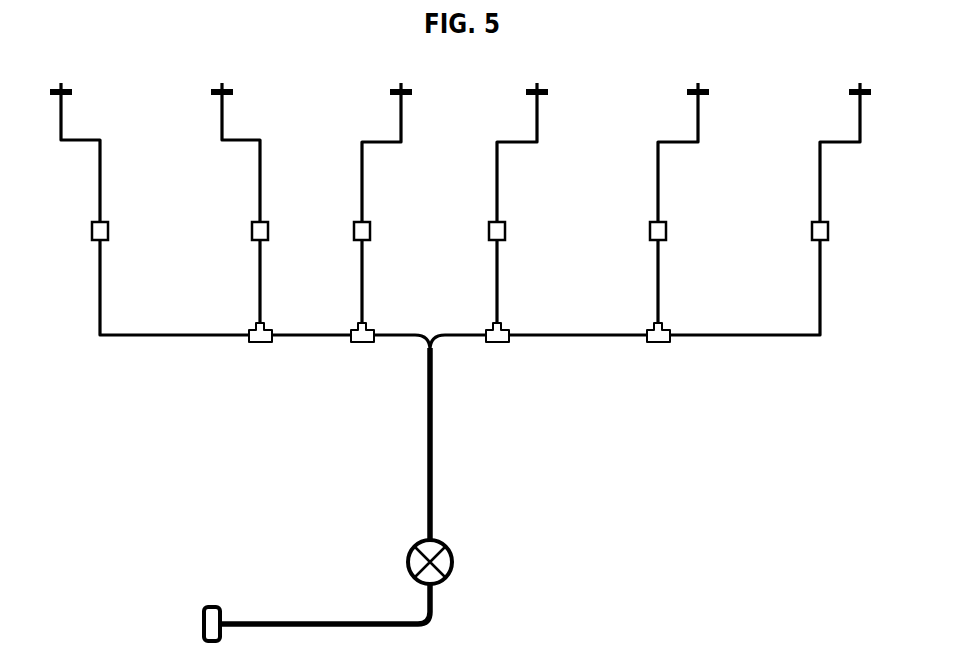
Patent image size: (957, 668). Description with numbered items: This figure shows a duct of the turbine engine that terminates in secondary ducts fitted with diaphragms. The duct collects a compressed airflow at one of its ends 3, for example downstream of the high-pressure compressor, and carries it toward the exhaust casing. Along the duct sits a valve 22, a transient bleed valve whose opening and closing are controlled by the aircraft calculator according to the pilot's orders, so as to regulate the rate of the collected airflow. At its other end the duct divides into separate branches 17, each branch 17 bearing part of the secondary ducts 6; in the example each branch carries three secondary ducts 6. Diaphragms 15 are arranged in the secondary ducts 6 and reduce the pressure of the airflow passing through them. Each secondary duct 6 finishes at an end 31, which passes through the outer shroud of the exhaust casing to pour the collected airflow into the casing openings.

The end of the secondary ducts 31 is at (64, 86).
The diaphragm 15 is at (110, 230).
The branch 17 is at (196, 361).
The secondary duct 6 is at (455, 483).
The valve 22 is at (455, 560).
The end of the duct 3 is at (201, 623).